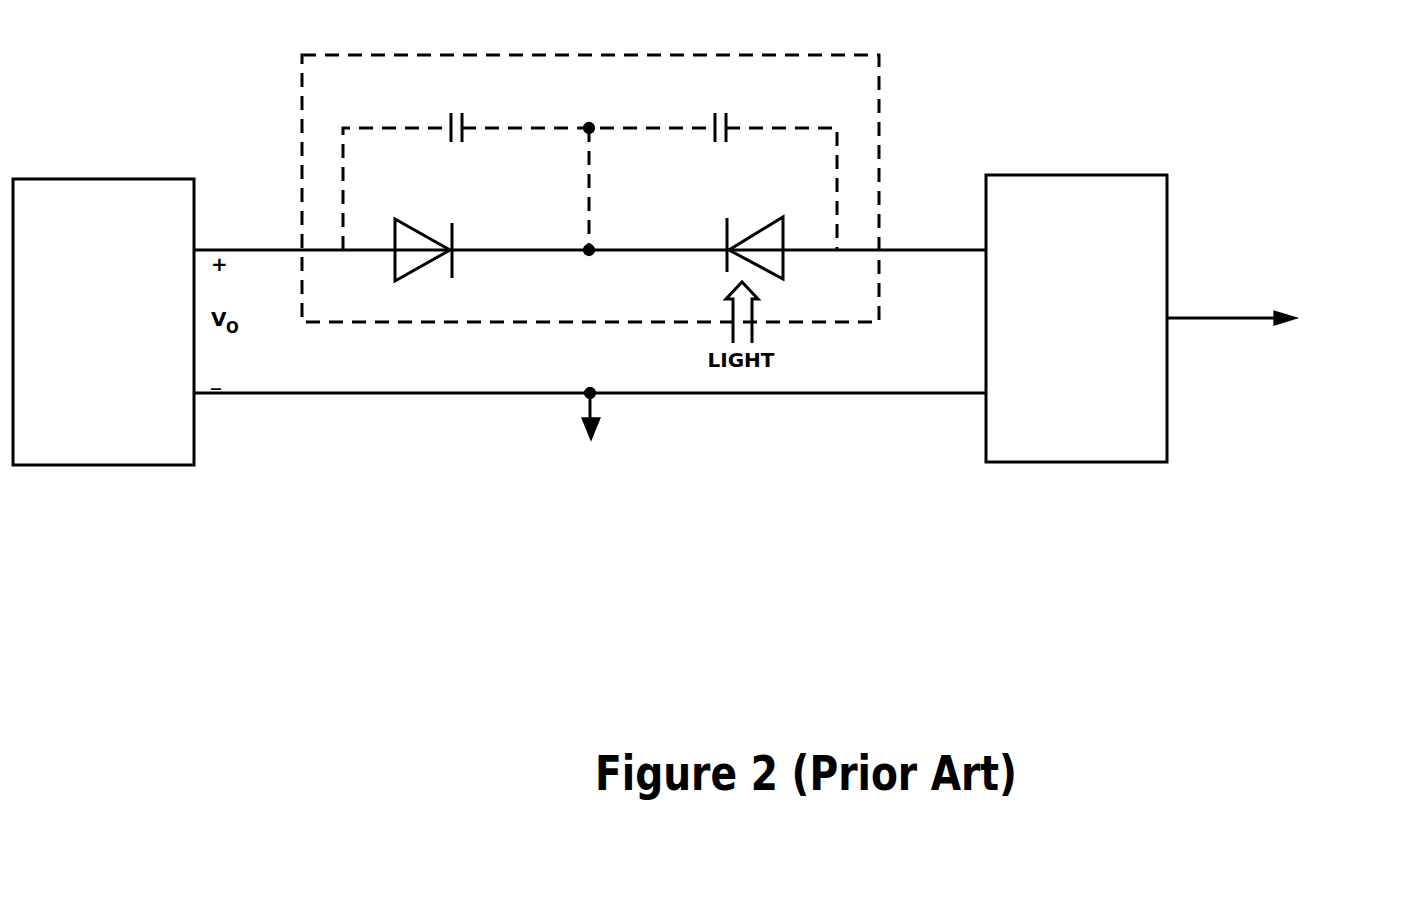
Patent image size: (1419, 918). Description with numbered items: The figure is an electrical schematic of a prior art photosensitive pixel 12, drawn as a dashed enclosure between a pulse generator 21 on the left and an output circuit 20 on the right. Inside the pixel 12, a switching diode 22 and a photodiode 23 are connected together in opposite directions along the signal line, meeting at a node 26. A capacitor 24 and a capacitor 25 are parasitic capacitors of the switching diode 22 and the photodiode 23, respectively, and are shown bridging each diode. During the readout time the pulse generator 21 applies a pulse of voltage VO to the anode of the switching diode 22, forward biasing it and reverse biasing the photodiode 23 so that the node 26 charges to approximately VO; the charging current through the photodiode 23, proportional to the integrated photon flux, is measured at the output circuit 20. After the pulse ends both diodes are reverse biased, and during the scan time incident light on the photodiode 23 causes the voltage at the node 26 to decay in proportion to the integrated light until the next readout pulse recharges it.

The pixel 12 is at (701, 52).
The output circuit 20 is at (1125, 173).
The pulse generator 21 is at (142, 177).
The switching diode 22 is at (425, 263).
The photodiode 23 is at (786, 260).
The capacitor 24 is at (459, 111).
The capacitor 25 is at (724, 111).
The node 26 is at (596, 255).